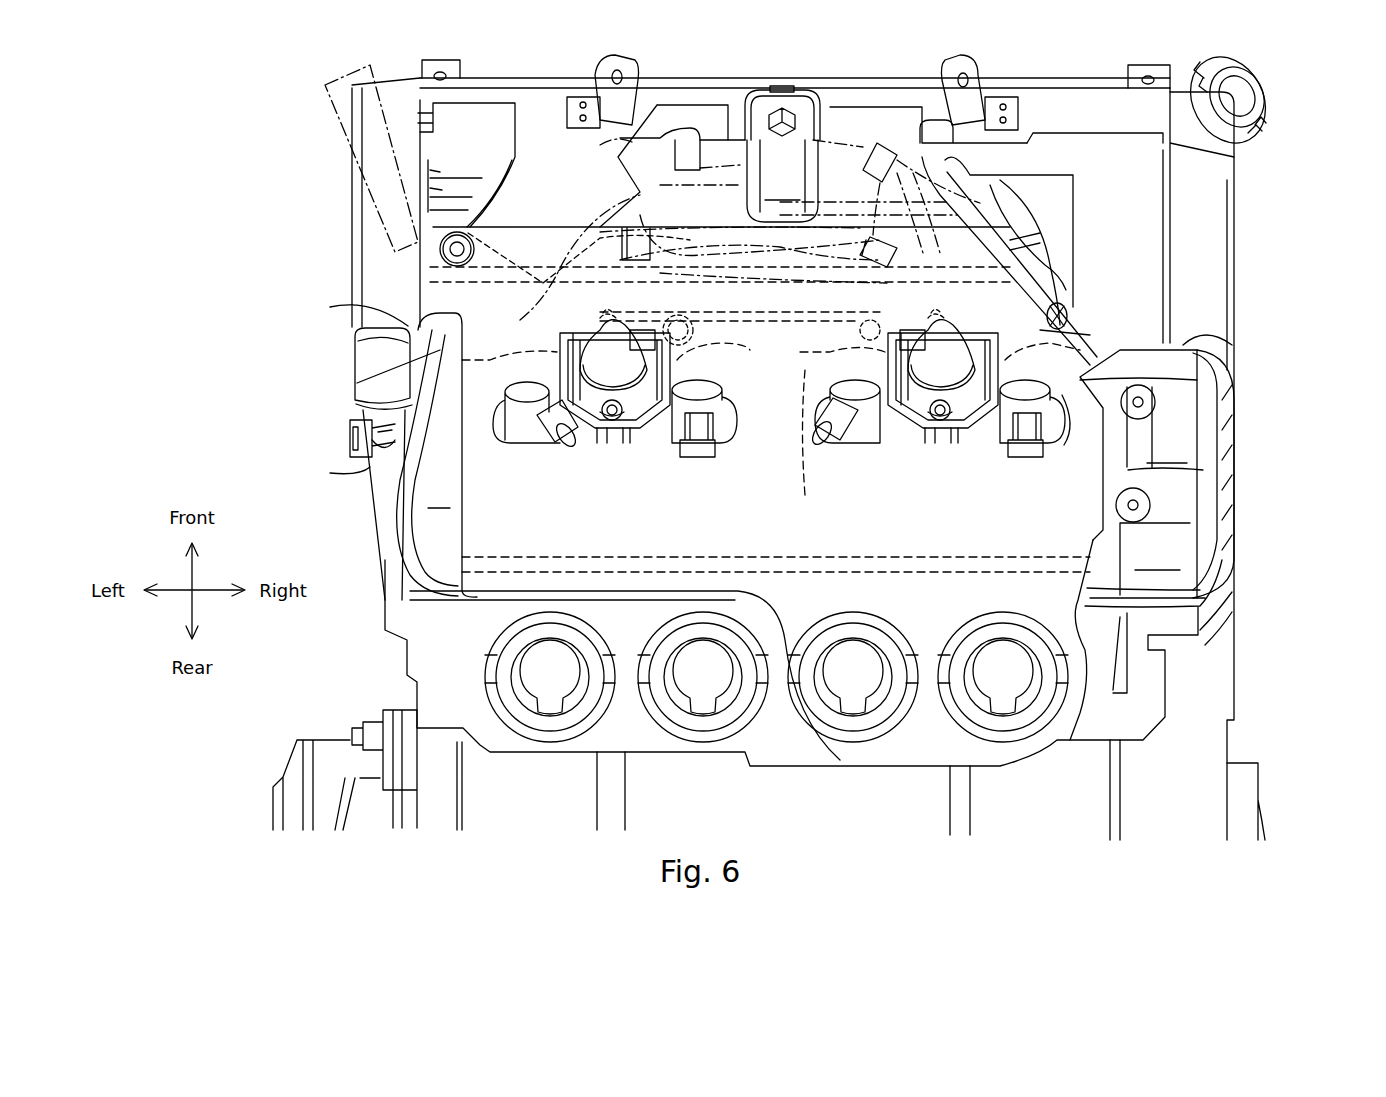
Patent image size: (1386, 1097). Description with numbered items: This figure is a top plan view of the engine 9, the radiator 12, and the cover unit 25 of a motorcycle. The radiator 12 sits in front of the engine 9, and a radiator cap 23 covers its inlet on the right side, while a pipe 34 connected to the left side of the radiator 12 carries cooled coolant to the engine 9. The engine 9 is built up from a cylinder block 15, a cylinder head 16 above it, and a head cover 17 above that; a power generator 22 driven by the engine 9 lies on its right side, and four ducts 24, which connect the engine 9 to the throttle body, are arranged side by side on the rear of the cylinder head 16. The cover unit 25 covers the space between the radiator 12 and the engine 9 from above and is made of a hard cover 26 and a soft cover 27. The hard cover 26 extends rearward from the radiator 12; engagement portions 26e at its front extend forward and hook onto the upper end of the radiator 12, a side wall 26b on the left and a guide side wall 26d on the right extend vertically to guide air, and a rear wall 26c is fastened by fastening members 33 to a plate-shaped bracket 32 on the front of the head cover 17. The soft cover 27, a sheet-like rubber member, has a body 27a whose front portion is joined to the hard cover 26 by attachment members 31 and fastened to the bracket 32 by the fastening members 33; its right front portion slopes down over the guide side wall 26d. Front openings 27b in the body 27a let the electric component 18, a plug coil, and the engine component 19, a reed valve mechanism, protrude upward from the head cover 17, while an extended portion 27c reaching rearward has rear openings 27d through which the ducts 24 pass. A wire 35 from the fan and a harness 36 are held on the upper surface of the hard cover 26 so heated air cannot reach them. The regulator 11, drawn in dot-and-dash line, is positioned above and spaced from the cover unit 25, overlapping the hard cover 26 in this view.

The engine 9 is at (1254, 494).
The regulator 11 is at (340, 118).
The radiator 12 is at (1254, 212).
The cylinder block 15 is at (418, 746).
The cylinder head 16 is at (1228, 605).
The head cover 17 is at (1193, 425).
The electric component 18 is at (1064, 445).
The engine component 19 is at (950, 365).
The power generator 22 is at (1240, 780).
The radiator cap 23 is at (1258, 128).
The duct 24 is at (752, 700).
The cover unit 25 is at (402, 289).
The hard cover 26 is at (716, 118).
The side wall 26b is at (410, 252).
The rear wall 26c is at (433, 347).
The guide side wall 26d is at (1072, 247).
The engagement portion 26e is at (682, 120).
The soft cover 27 is at (1010, 277).
The body 27a is at (438, 360).
The front opening 27b is at (915, 445).
The extended portion 27c is at (1070, 735).
The rear opening 27d is at (887, 730).
The attachment member 31 is at (1062, 312).
The bracket 32 is at (804, 447).
The fastening member 33 is at (748, 403).
The pipe 34 is at (378, 468).
The wire 35 is at (863, 125).
The harness 36 is at (673, 112).